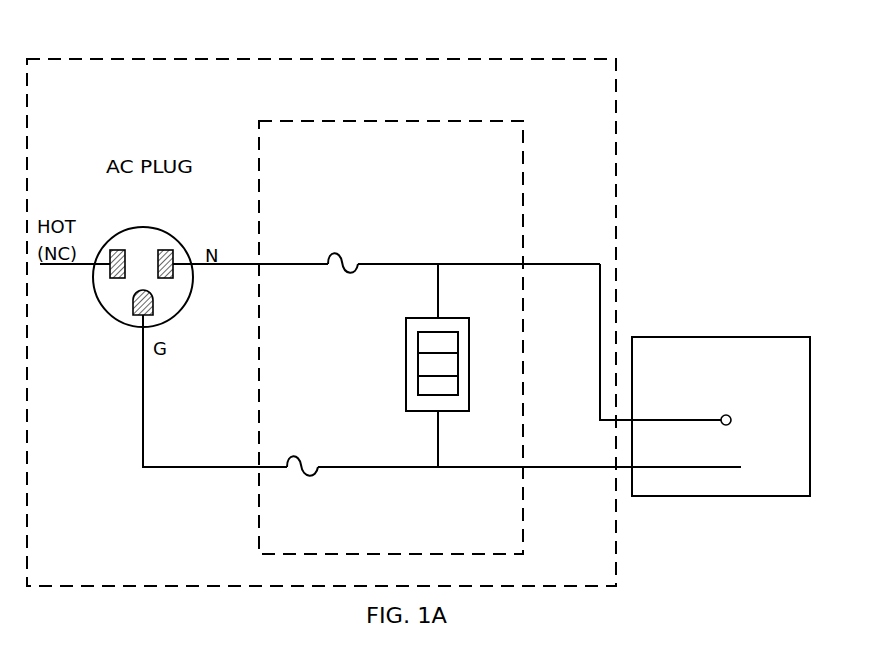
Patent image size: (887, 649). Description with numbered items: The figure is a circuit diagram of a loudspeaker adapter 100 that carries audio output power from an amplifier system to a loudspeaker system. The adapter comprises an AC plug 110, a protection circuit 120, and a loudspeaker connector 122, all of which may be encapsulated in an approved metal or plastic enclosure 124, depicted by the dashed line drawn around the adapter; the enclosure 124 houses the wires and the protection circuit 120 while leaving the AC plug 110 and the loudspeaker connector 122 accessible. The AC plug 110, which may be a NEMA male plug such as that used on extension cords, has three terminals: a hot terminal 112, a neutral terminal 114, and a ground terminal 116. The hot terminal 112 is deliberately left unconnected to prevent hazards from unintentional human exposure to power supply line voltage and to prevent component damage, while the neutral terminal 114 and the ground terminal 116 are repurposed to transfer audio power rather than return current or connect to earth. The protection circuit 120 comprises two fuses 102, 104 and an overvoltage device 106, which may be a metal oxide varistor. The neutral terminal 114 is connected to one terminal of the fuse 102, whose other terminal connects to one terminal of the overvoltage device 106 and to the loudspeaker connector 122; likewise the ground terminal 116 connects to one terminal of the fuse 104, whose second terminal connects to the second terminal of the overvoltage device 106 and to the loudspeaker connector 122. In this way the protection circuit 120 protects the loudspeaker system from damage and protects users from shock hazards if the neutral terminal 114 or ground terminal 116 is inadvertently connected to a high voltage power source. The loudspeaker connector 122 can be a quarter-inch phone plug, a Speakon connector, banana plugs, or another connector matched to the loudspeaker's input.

The loudspeaker adapter 100 is at (108, 22).
The fuse 102 is at (336, 257).
The fuse 104 is at (317, 473).
The overvoltage device 106 is at (400, 392).
The AC plug 110 is at (108, 300).
The hot terminal 112 is at (125, 252).
The neutral terminal 114 is at (172, 256).
The ground terminal 116 is at (152, 312).
The protection circuit 120 is at (262, 128).
The loudspeaker connector 122 is at (780, 337).
The enclosure 124 is at (617, 100).